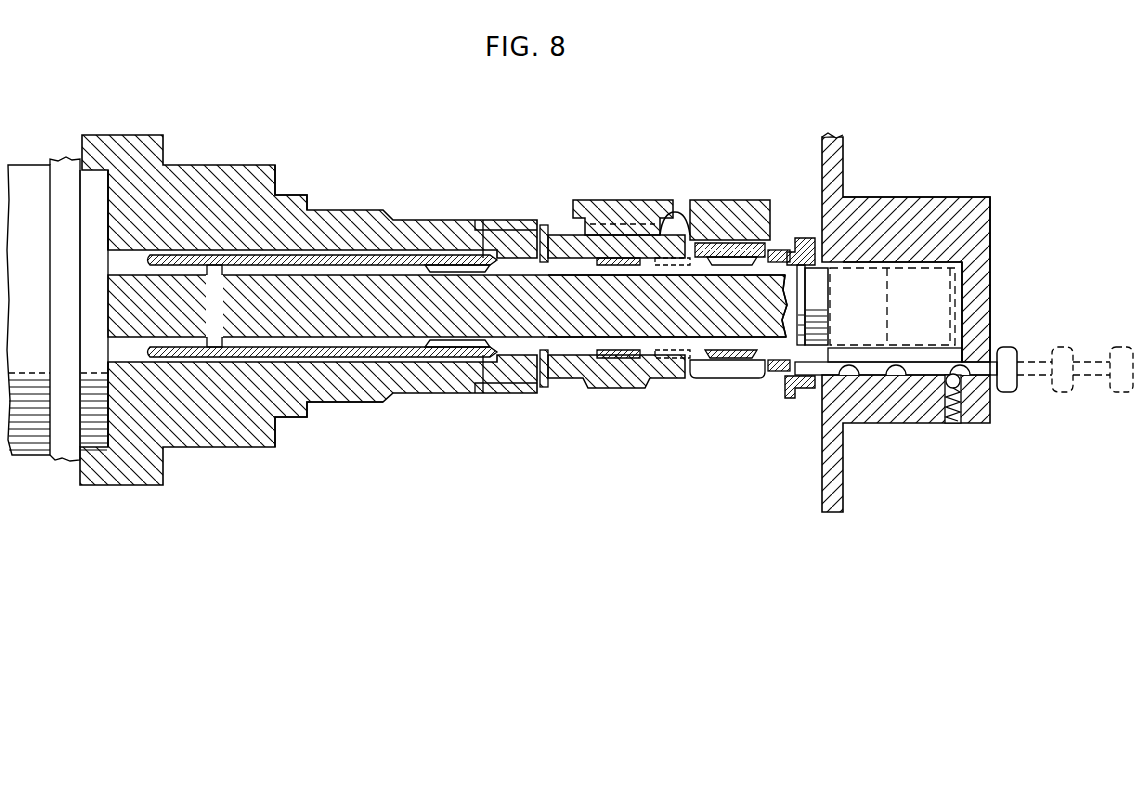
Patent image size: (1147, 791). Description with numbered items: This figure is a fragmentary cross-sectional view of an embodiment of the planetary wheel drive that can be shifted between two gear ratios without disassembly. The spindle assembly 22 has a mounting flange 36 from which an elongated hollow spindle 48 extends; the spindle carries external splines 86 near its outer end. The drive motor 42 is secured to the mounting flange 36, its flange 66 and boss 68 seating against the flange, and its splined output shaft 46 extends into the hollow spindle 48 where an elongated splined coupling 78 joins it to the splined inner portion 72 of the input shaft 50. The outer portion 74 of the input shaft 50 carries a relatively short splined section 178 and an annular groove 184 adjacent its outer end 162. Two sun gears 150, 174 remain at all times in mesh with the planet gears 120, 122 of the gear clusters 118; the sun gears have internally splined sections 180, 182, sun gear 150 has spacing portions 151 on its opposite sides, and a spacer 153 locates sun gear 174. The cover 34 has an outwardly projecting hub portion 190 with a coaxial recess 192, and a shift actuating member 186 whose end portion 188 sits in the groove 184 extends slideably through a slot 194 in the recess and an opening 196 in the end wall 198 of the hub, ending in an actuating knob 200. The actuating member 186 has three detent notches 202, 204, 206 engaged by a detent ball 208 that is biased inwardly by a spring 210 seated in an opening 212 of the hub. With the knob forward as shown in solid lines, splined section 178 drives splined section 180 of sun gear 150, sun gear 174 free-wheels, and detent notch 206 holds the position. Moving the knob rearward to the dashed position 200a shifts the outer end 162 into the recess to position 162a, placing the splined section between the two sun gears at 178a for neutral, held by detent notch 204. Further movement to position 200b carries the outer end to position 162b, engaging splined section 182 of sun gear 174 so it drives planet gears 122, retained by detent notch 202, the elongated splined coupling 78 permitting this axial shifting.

The spindle assembly 22 is at (314, 173).
The cover 34 is at (843, 162).
The mounting flange 36 is at (125, 135).
The drive motor 42 is at (38, 321).
The splined output shaft 46 is at (178, 314).
The hollow spindle 48 is at (335, 402).
The input shaft 50 is at (576, 285).
The motor flange 66 is at (65, 447).
The motor boss 68 is at (106, 323).
The inner portion of input shaft 72 is at (384, 282).
The outer portion of input shaft 74 is at (714, 281).
The splined coupling 78 is at (240, 357).
The external splines 86 is at (503, 393).
The gear clusters 118 is at (678, 212).
The planet gears 120 is at (605, 200).
The planet gears 122 is at (728, 220).
The sun gear 150 is at (615, 390).
The spacing portions 151 is at (565, 380).
The spacer 153 is at (773, 250).
The outer end of input shaft 162 is at (829, 298).
The outer end position 162a is at (893, 305).
The outer end position 162b is at (966, 280).
The sun gear 174 is at (727, 380).
The splined section 178 is at (618, 265).
The splined section position 178a is at (670, 266).
The internally splined section 180 is at (610, 350).
The internally splined section 182 is at (727, 350).
The annular groove 184 is at (803, 250).
The shift actuating member 186 is at (800, 390).
The end portion 188 is at (783, 372).
The hub portion 190 is at (978, 218).
The recess 192 is at (916, 255).
The slot 194 is at (906, 348).
The opening 196 is at (990, 338).
The end wall 198 is at (980, 297).
The actuating knob 200 is at (1010, 393).
The actuating knob position 200a is at (1066, 347).
The actuating knob position 200b is at (1120, 392).
The detent notch 202 is at (849, 375).
The detent notch 204 is at (906, 375).
The detent notch 206 is at (970, 375).
The detent ball 208 is at (947, 385).
The spring 210 is at (961, 412).
The opening 212 is at (957, 423).